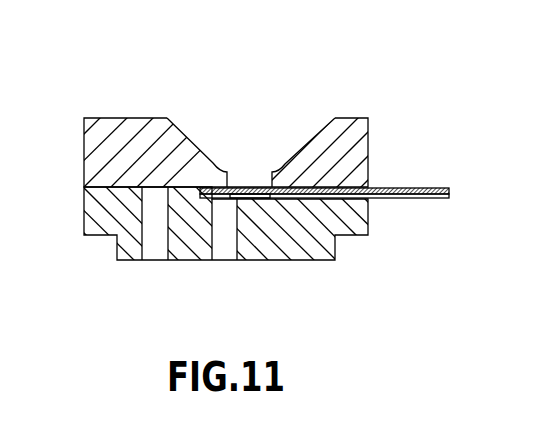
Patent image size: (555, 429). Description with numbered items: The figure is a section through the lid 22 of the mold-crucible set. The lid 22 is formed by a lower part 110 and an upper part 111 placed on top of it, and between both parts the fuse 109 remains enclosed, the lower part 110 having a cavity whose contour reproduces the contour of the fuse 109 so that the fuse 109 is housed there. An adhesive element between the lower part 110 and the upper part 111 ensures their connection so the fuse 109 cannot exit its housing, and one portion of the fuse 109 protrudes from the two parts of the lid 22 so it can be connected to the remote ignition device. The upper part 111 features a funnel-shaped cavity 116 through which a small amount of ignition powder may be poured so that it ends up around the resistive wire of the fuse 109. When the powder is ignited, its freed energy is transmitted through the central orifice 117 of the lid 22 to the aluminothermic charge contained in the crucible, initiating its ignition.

The lid 22 is at (369, 77).
The fuse 109 is at (407, 190).
The lower part 110 is at (130, 245).
The upper part 111 is at (125, 142).
The cavity 116 is at (256, 148).
The central orifice 117 is at (225, 250).